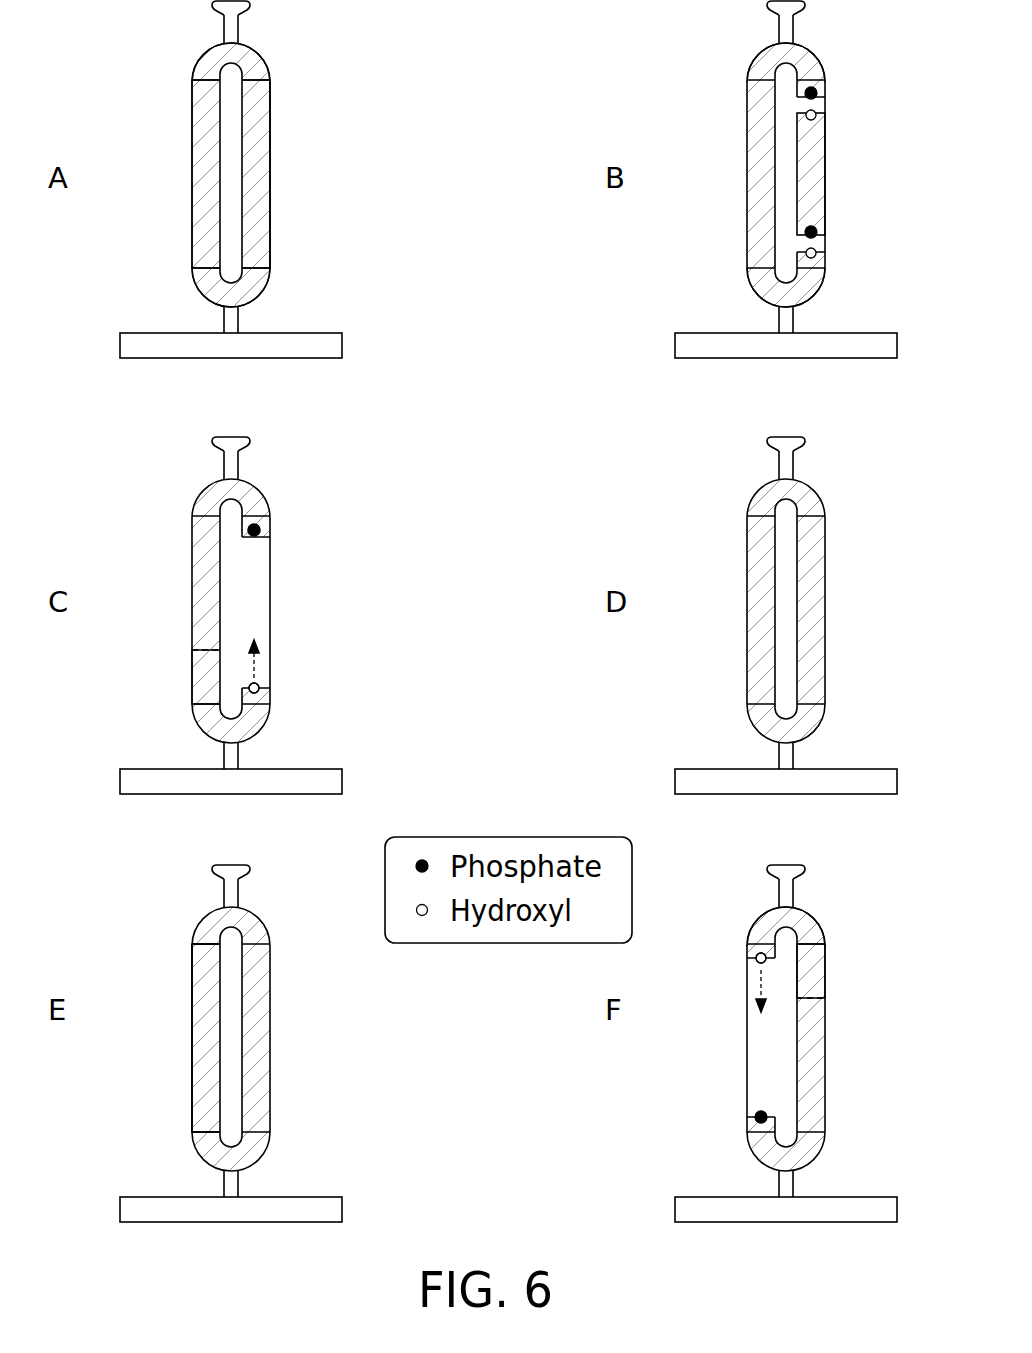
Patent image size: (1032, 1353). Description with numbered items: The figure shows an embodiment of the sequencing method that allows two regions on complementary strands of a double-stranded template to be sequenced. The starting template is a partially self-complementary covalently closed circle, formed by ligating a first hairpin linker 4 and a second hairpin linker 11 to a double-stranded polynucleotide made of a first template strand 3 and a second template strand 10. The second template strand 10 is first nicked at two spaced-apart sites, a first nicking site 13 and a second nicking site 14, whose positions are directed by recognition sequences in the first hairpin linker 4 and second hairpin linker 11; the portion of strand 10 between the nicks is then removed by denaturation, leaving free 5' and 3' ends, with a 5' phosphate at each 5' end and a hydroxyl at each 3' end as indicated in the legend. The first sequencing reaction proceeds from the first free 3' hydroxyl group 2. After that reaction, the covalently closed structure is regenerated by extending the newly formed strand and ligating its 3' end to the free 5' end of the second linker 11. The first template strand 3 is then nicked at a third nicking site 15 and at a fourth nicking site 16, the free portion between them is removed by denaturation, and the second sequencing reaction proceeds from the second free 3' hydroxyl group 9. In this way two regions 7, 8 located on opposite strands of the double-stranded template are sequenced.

The first free 3' hydroxyl group 2 is at (268, 691).
The first template strand 3 is at (180, 606).
The 3' end 3' is at (555, 603).
The first hairpin linker 4 is at (195, 288).
The 5' end 5' is at (788, 606).
The first sequenced region 7 is at (185, 650).
The second sequenced region 8 is at (832, 944).
The second free 3' hydroxyl group 9 is at (755, 959).
The second template strand 10 is at (288, 80).
The second hairpin linker 11 is at (262, 50).
The first nicking site 13 is at (280, 125).
The second nicking site 14 is at (280, 230).
The third nicking site 15 is at (182, 988).
The fourth nicking site 16 is at (182, 1095).